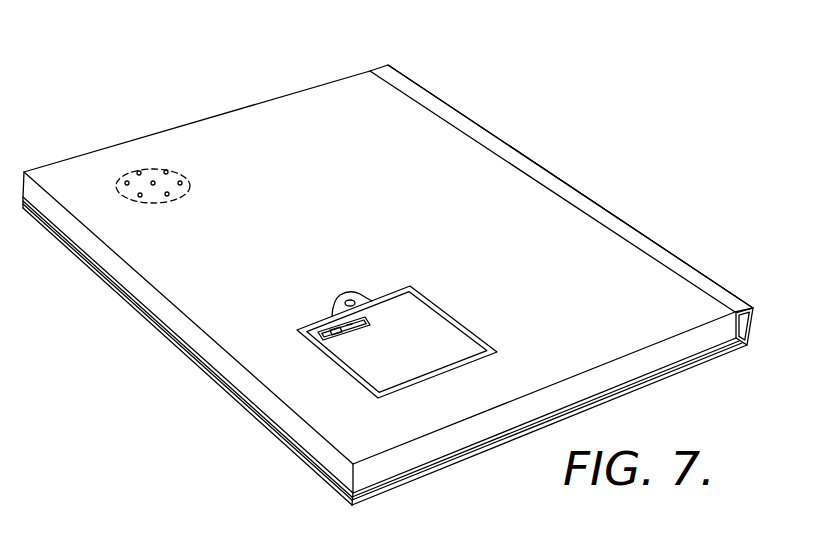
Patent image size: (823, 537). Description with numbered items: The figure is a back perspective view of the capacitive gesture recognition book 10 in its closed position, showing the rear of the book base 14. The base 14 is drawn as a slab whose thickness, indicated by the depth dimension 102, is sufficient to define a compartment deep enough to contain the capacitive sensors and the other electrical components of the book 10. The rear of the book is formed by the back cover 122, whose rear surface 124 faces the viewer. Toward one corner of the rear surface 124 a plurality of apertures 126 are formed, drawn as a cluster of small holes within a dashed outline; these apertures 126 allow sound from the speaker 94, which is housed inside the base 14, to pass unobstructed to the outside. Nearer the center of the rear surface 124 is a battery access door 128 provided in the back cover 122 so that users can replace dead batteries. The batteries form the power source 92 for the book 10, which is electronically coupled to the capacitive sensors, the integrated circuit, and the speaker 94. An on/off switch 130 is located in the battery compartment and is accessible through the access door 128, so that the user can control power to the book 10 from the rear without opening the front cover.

The capacitive gesture recognition book 10 is at (413, 259).
The book base 14 is at (238, 109).
The power source 92 is at (387, 342).
The speaker 94 is at (157, 193).
The depth dimension 102 is at (763, 306).
The back cover 122 is at (344, 87).
The rear surface 124 is at (640, 260).
The apertures 126 is at (153, 186).
The battery access door 128 is at (434, 339).
The on/off switch 130 is at (353, 322).